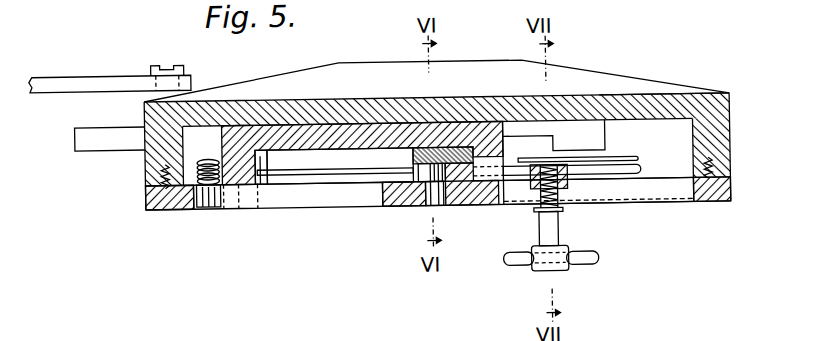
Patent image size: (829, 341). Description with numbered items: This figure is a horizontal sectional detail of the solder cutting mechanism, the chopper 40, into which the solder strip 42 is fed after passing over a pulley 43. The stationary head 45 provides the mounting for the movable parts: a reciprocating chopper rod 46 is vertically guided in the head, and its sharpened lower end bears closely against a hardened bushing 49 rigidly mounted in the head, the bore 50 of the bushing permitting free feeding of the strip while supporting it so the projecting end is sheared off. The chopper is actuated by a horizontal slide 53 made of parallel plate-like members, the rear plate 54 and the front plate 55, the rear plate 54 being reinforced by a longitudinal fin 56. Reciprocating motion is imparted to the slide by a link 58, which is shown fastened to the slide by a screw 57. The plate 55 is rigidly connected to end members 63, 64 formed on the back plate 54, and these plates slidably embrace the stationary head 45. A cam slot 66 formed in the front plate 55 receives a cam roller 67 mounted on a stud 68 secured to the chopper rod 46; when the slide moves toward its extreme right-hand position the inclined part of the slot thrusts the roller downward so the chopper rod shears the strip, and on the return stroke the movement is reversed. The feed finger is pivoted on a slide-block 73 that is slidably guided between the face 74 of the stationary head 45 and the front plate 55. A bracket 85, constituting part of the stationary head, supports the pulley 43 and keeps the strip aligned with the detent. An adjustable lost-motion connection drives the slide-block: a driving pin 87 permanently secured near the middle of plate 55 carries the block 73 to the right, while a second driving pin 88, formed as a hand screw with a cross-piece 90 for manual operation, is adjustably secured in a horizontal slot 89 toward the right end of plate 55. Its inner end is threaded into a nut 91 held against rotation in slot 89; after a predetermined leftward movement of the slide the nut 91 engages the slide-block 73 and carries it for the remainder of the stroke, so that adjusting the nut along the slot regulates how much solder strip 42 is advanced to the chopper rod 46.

The chopper 40 is at (259, 211).
The solder strip 42 is at (307, 176).
The pulley 43 is at (600, 183).
The stationary head 45 is at (340, 132).
The chopper rod 46 is at (200, 164).
The hardened bushing 49 is at (258, 176).
The bore 50 is at (238, 188).
The horizontal slide 53 is at (288, 113).
The rear plate 54 is at (632, 111).
The front plate 55 is at (407, 208).
The longitudinal fin 56 is at (577, 85).
The screw 57 is at (158, 66).
The link 58 is at (100, 72).
The end member 63 is at (717, 144).
The end member 64 is at (145, 160).
The cam slot 66 is at (342, 204).
The cam roller 67 is at (198, 210).
The stud 68 is at (193, 188).
The slide-block 73 is at (448, 193).
The face 74 is at (323, 152).
The bracket 85 is at (605, 146).
The driving pin 87 is at (427, 208).
The driving pin 88 is at (548, 185).
The horizontal slot 89 is at (663, 199).
The cross-piece 90 is at (583, 266).
The nut 91 is at (572, 178).